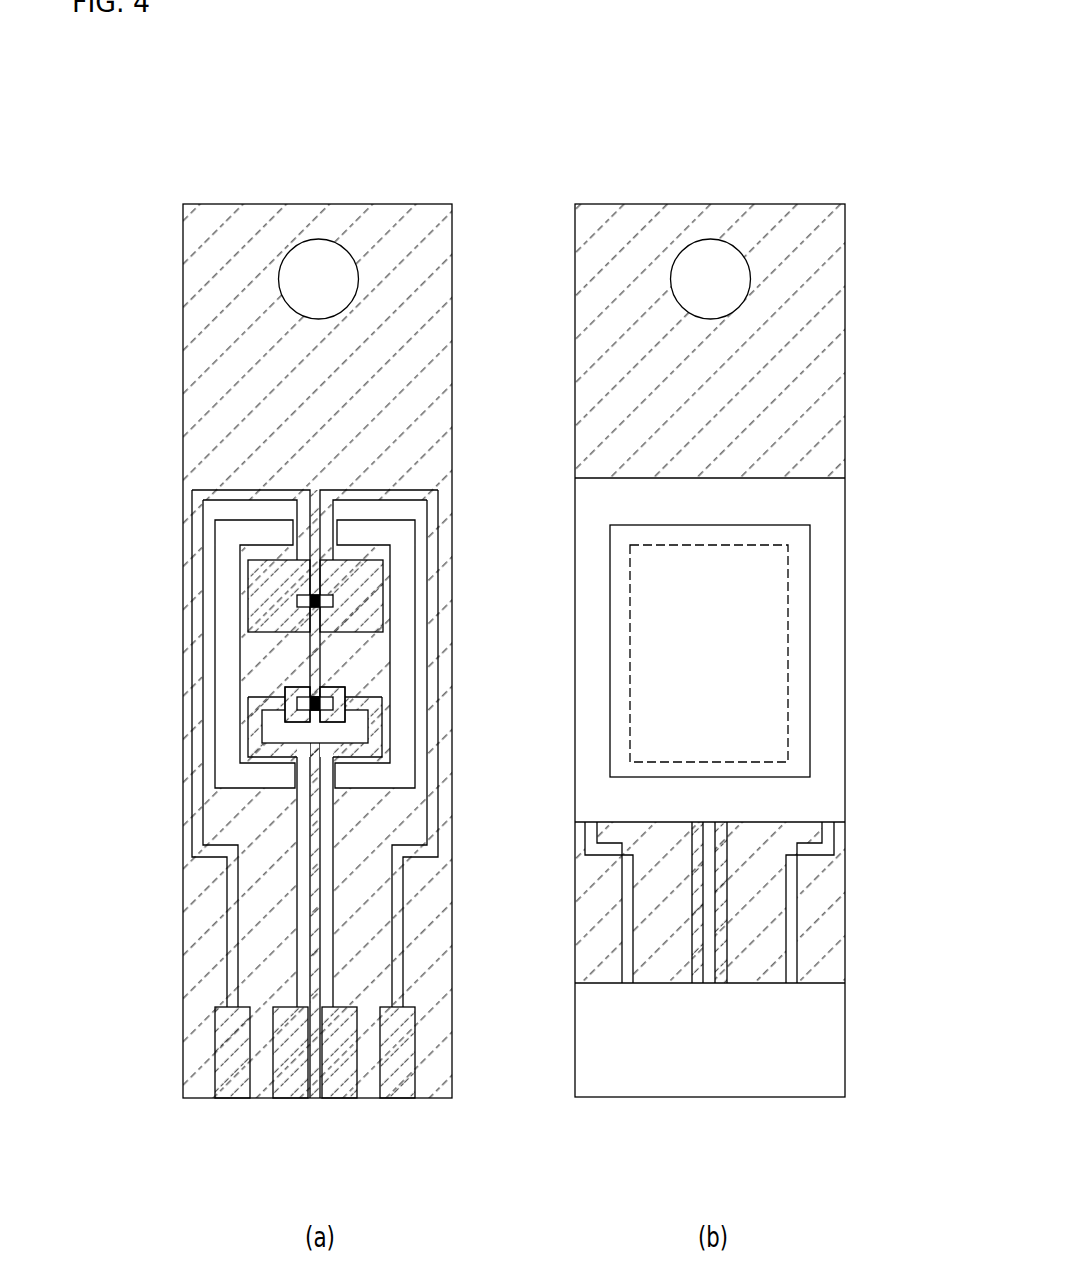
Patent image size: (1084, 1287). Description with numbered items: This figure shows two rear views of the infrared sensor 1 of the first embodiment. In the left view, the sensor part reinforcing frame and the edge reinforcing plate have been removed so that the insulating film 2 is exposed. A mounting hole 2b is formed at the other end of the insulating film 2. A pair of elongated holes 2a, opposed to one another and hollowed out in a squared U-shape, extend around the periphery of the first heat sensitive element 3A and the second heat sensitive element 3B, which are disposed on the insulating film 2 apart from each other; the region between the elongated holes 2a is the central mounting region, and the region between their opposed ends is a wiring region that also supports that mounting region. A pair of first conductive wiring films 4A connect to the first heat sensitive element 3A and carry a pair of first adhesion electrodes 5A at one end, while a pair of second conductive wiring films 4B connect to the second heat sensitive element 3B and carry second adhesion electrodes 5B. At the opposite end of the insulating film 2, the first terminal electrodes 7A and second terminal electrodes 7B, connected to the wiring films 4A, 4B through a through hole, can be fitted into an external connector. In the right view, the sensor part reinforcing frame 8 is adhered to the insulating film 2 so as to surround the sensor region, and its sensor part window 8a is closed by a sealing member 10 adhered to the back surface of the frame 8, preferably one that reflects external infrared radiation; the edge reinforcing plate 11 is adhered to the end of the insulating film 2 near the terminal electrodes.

The infrared sensor 1 is at (470, 190).
The insulating film 2 is at (443, 403).
The elongated holes 2a is at (253, 788).
The mounting hole 2b is at (303, 247).
The first heat sensitive element 3A is at (333, 598).
The second heat sensitive element 3B is at (333, 704).
The first conductive wiring films 4A is at (395, 623).
The second conductive wiring films 4B is at (395, 757).
The first adhesion electrodes 5A is at (372, 548).
The second adhesion electrodes 5B is at (340, 687).
The first terminal electrodes 7A is at (232, 1093).
The second terminal electrodes 7B is at (288, 1093).
The sensor part reinforcing frame 8 is at (836, 763).
The sensor part window 8a is at (788, 593).
The sealing member 10 is at (810, 699).
The edge reinforcing plate 11 is at (834, 1046).